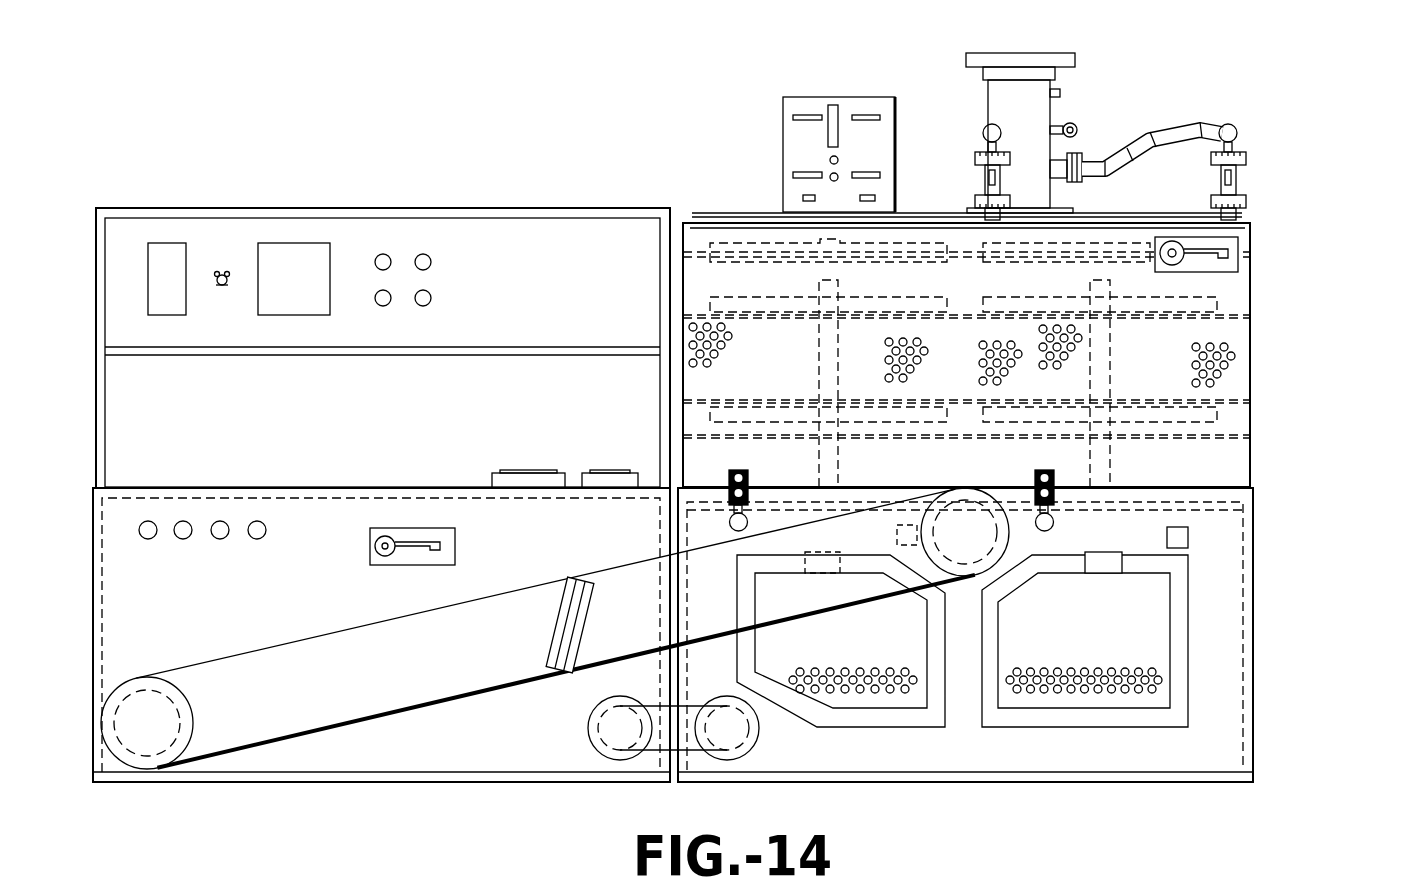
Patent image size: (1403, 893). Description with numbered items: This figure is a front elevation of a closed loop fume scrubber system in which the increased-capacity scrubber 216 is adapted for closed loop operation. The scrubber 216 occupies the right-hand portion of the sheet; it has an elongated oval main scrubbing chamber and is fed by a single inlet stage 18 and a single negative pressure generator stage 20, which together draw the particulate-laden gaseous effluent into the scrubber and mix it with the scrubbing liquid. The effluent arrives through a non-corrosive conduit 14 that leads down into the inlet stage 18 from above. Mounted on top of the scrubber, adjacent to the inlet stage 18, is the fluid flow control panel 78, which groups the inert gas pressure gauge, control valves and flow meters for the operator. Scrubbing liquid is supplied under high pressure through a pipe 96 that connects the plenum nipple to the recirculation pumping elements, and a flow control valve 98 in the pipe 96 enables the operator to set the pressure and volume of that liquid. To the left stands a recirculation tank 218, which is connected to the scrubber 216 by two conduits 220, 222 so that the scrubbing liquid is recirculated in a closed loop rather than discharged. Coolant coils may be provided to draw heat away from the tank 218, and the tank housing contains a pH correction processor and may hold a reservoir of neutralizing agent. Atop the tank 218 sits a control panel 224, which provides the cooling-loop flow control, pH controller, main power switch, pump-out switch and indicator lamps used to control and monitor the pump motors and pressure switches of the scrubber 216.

The non-corrosive conduit 14 is at (1019, 52).
The inlet stage 18 is at (1037, 113).
The negative pressure generator stage 20 is at (1043, 200).
The fluid flow control panel 78 is at (813, 103).
The pipe 96 is at (1208, 130).
The flow control valve 98 is at (1240, 178).
The scrubber 216 is at (1310, 637).
The recirculation tank 218 is at (405, 742).
The conduit 220 is at (260, 683).
The conduit 222 is at (733, 734).
The control panel 224 is at (227, 230).